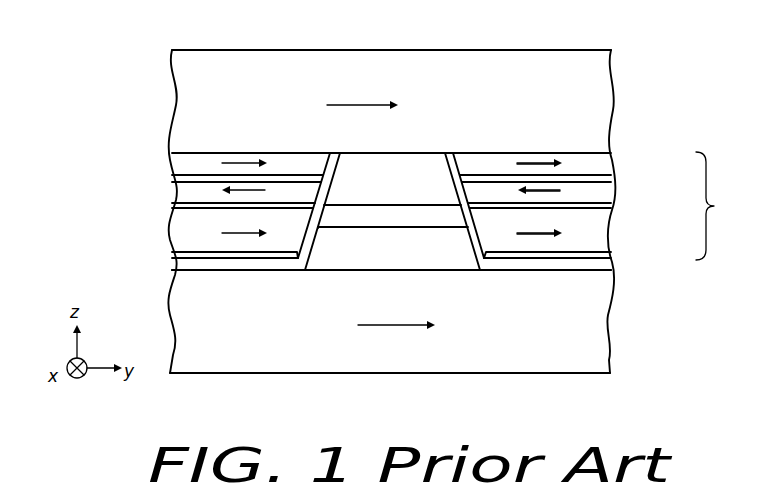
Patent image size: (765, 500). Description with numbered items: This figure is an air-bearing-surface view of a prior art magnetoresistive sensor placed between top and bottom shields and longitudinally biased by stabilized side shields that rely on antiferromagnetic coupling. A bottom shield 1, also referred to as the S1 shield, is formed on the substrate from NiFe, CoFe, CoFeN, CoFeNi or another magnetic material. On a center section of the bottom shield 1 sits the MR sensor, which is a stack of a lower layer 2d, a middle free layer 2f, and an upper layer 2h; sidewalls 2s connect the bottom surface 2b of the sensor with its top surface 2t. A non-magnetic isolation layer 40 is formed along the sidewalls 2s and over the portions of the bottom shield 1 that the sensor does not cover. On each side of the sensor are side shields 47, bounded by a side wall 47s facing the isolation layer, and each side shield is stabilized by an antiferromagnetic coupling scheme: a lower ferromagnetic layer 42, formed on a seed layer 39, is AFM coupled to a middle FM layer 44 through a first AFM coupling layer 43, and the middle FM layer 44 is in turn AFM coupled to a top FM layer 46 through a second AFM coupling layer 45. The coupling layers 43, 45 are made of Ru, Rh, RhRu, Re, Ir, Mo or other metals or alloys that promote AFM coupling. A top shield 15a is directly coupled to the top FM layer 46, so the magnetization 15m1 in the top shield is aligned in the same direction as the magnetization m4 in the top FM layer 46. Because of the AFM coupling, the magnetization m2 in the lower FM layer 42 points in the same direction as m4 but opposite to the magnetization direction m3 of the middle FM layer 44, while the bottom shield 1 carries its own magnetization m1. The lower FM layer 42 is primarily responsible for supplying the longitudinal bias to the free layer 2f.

The bottom shield 1 is at (605, 325).
The top shield 15a is at (603, 122).
The magnetization in the top shield 15m1 is at (345, 105).
The upper layer 2h is at (397, 168).
The top surface 2t is at (413, 153).
The sidewalls 2s is at (332, 153).
The bottom surface 2b is at (342, 272).
The middle free layer 2f is at (330, 217).
The lower layer 2d is at (363, 258).
The seed layer 39 is at (181, 255).
The non-magnetic isolation layer 40 is at (181, 267).
The lower ferromagnetic layer 42 is at (182, 229).
The first antiferromagnetic coupling layer 43 is at (182, 205).
The middle ferromagnetic layer 44 is at (182, 189).
The second antiferromagnetic coupling layer 45 is at (182, 178).
The top ferromagnetic layer 46 is at (181, 164).
The side shields 47 is at (718, 206).
The side wall of stack 47s is at (473, 243).
The magnetization direction m1 is at (402, 327).
The magnetization in the lower FM layer m2 is at (528, 233).
The magnetization direction of the middle FM layer m3 is at (558, 190).
The magnetization in FM layer 46 m4 is at (518, 163).